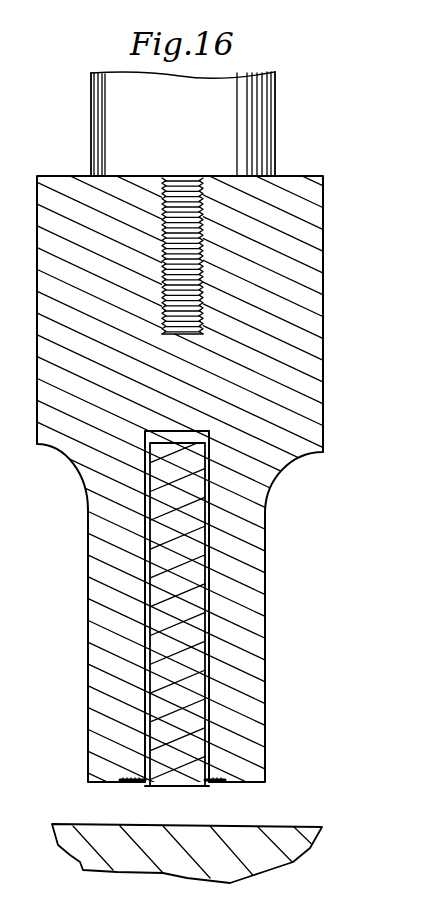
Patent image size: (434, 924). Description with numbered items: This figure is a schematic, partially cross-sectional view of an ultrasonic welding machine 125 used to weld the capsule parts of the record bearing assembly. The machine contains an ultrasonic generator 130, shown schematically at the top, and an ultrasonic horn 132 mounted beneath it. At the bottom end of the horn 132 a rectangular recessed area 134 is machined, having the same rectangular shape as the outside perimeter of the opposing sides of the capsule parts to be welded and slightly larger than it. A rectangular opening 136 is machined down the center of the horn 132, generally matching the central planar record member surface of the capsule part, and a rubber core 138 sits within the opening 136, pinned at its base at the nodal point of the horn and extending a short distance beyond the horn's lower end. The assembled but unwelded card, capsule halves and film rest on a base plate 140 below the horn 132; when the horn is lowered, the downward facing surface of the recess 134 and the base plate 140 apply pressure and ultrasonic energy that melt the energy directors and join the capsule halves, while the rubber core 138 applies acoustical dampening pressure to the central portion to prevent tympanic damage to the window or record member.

The ultrasonic welding machine 125 is at (260, 60).
The ultrasonic generator 130 is at (275, 88).
The ultrasonic horn 132 is at (322, 325).
The rectangular recessed area 134 is at (210, 788).
The rectangular opening 136 is at (200, 787).
The rubber core 138 is at (187, 658).
The base plate 140 is at (267, 858).